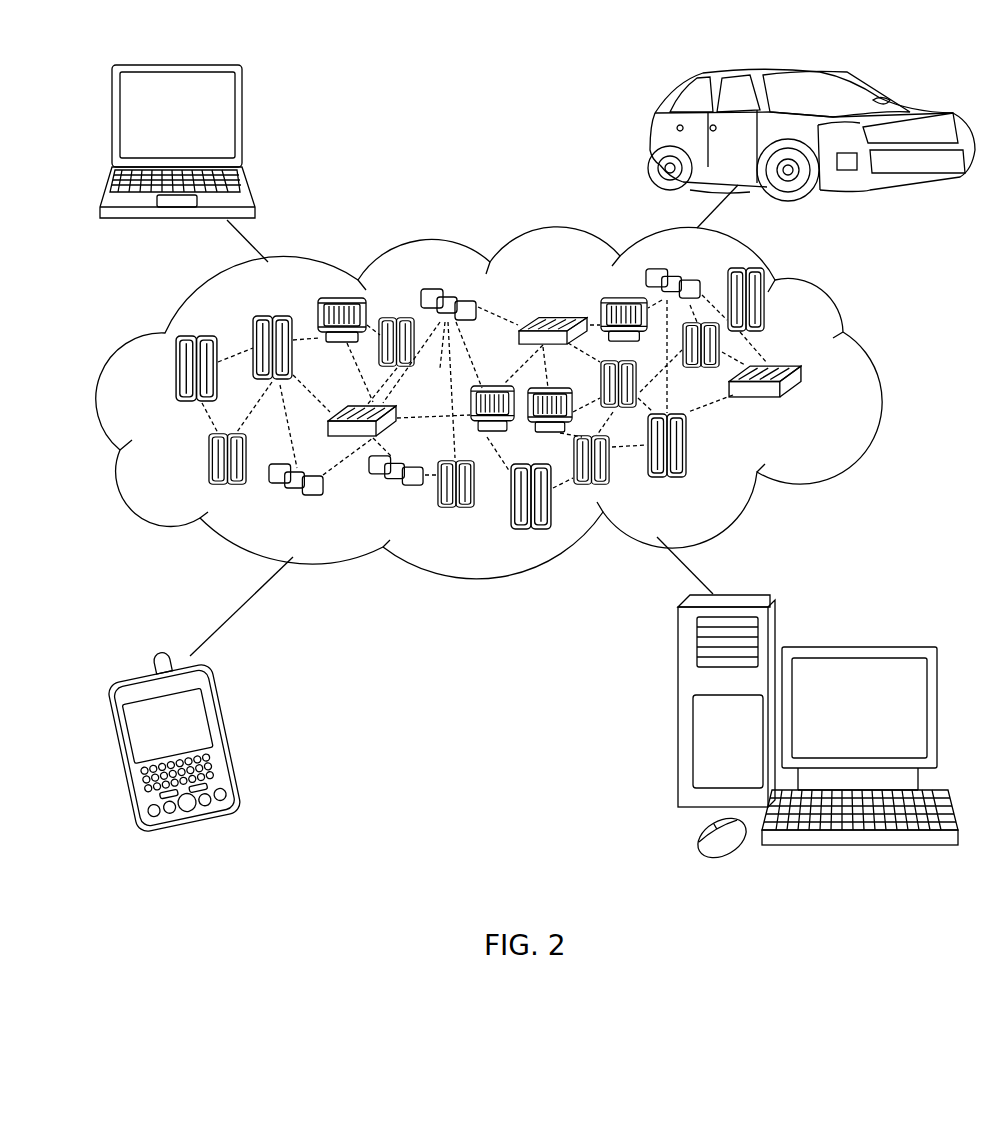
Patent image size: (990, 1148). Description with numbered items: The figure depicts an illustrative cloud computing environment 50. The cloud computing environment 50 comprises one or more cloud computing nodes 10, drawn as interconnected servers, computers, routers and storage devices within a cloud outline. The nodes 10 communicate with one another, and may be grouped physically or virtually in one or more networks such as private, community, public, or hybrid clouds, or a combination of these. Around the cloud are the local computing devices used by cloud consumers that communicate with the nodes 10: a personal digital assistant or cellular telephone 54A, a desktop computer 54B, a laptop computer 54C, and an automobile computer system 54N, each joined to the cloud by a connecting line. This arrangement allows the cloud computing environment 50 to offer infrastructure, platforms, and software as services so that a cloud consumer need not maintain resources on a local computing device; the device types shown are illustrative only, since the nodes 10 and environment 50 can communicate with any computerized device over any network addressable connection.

The cloud computing node 10 is at (802, 407).
The cloud computing environment 50 is at (857, 378).
The personal digital assistant or cellular telephone 54A is at (233, 735).
The desktop computer 54B is at (857, 643).
The laptop computer 54C is at (243, 122).
The automobile computer system 54N is at (653, 138).